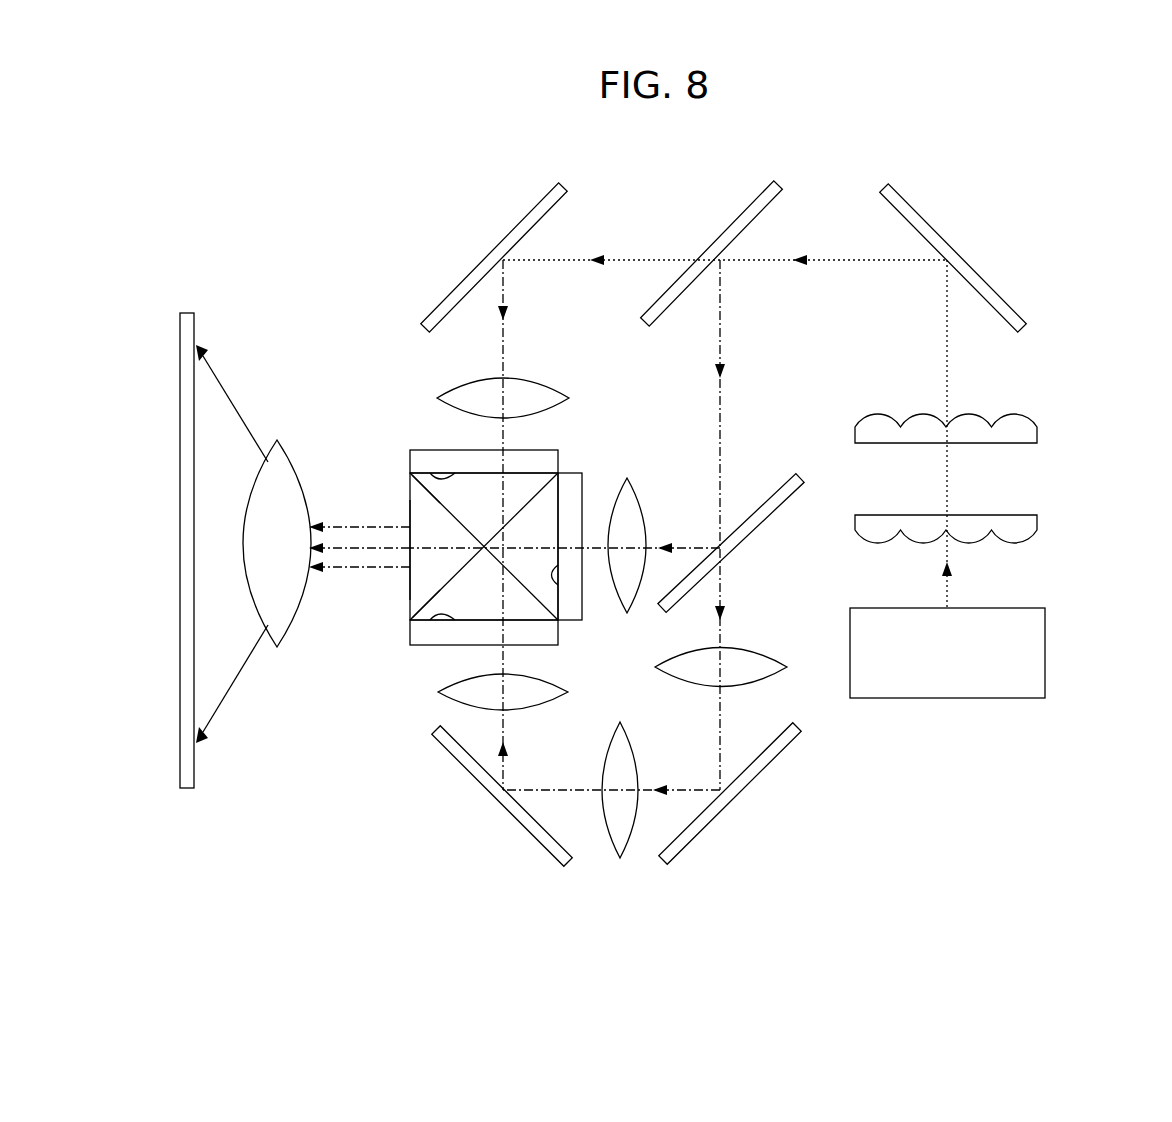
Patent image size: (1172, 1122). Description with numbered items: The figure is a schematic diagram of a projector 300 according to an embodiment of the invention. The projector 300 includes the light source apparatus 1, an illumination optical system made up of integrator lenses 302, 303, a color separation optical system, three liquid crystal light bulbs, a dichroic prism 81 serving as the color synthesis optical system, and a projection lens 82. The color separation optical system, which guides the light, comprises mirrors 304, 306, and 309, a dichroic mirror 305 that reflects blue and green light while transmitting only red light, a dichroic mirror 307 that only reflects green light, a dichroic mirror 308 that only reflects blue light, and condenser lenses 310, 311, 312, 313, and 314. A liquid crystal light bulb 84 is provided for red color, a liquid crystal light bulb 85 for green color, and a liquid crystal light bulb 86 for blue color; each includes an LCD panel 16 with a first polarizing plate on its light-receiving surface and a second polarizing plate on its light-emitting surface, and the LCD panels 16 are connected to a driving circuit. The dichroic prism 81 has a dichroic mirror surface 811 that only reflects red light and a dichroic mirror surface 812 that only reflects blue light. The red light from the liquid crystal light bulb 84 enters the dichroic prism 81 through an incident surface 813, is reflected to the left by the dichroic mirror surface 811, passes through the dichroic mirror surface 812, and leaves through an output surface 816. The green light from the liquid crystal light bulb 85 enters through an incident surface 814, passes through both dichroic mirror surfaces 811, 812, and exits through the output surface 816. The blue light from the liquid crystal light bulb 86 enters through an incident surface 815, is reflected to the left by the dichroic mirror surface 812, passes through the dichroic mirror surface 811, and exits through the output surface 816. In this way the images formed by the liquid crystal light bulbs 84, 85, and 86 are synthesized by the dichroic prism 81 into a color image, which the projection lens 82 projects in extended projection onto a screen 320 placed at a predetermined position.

The light source apparatus 1 is at (1008, 607).
The LCD panel 16 is at (519, 550).
The dichroic prism 81 is at (425, 598).
The dichroic mirror surface 811 is at (442, 577).
The dichroic mirror surface 812 is at (430, 494).
The incident surface 813 is at (440, 478).
The incident surface 814 is at (548, 568).
The incident surface 815 is at (432, 632).
The output surface 816 is at (410, 517).
The projection lens 82 is at (278, 455).
The liquid crystal light bulb for red color 84 is at (415, 461).
The liquid crystal light bulb for green color 85 is at (570, 476).
The liquid crystal light bulb for blue color 86 is at (550, 634).
The projector 300 is at (1036, 246).
The integrator lens 302 is at (1020, 532).
The integrator lens 303 is at (1020, 430).
The mirror 304 is at (930, 214).
The dichroic mirror 305 is at (750, 210).
The mirror 306 is at (520, 222).
The dichroic mirror 307 is at (768, 500).
The dichroic mirror 308 is at (784, 744).
The mirror 309 is at (472, 776).
The condenser lens 310 is at (460, 390).
The condenser lens 311 is at (630, 500).
The condenser lens 312 is at (742, 658).
The condenser lens 313 is at (625, 826).
The condenser lens 314 is at (458, 702).
The screen 320 is at (188, 770).